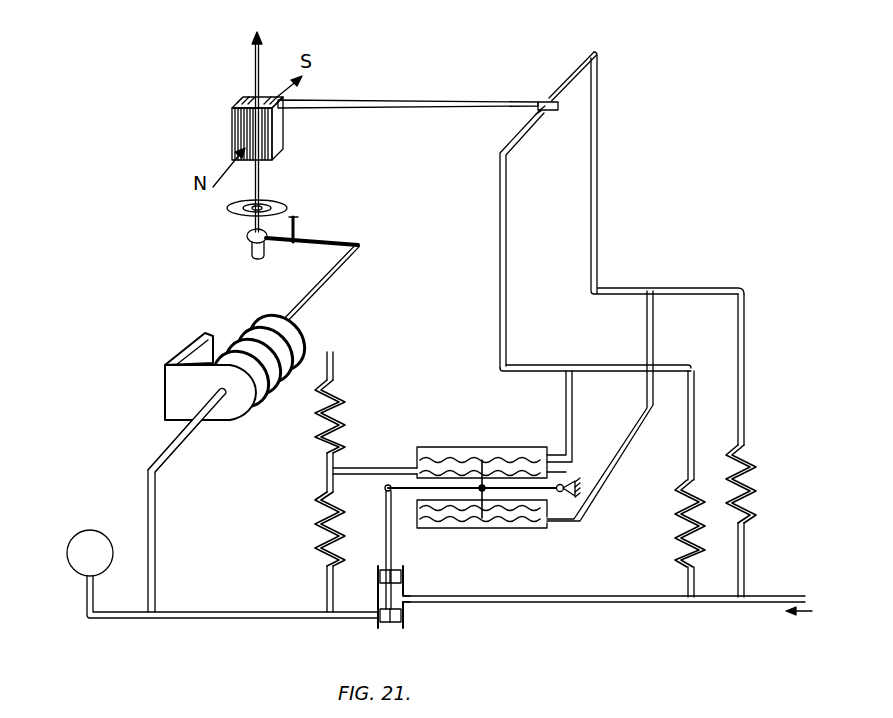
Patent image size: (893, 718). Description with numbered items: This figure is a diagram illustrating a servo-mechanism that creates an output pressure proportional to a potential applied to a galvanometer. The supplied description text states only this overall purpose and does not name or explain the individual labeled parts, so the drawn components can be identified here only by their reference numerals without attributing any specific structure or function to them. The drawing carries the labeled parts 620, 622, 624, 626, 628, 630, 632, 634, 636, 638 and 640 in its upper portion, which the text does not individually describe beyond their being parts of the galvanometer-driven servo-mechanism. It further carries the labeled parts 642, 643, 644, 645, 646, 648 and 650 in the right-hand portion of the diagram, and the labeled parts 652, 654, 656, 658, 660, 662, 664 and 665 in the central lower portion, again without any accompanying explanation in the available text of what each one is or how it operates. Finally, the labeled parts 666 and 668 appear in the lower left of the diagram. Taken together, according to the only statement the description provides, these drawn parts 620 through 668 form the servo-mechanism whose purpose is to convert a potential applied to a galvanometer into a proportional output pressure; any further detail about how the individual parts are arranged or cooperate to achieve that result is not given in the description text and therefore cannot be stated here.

The permanent magnet 620 is at (286, 138).
The shaft 622 is at (255, 67).
The disc 624 is at (284, 204).
The bracket 626 is at (298, 218).
The arm 628 is at (320, 246).
The rod 630 is at (323, 292).
The solenoid 632 is at (250, 320).
The lever 634 is at (410, 101).
The block 636 is at (549, 112).
The tip 638 is at (534, 114).
The rod 640 is at (556, 94).
The pipe 642 is at (508, 320).
The resistance coil 643 is at (680, 520).
The pipe 644 is at (599, 232).
The resistance coil 645 is at (757, 481).
The supply pipe 646 is at (778, 596).
The pipe 648 is at (565, 412).
The pipe 650 is at (611, 458).
The heating coil 652 is at (435, 457).
The heating coil 654 is at (486, 525).
The piston valve 656 is at (418, 588).
The resistance coil 658 is at (337, 520).
The resistance coil 660 is at (340, 405).
The pipe 662 is at (368, 467).
The pipe 664 is at (550, 473).
The beam 665 is at (418, 491).
The pipe 666 is at (156, 540).
The pressure gauge 668 is at (89, 531).